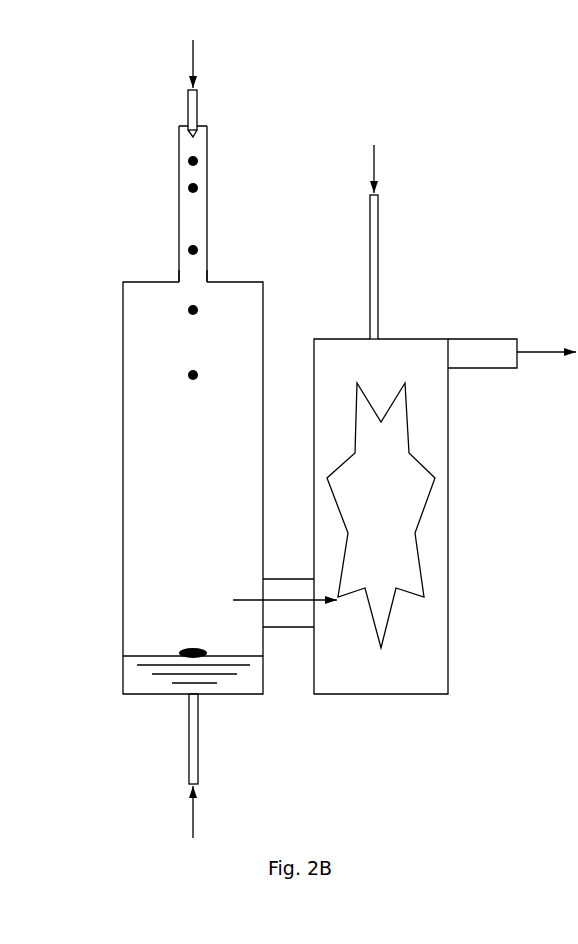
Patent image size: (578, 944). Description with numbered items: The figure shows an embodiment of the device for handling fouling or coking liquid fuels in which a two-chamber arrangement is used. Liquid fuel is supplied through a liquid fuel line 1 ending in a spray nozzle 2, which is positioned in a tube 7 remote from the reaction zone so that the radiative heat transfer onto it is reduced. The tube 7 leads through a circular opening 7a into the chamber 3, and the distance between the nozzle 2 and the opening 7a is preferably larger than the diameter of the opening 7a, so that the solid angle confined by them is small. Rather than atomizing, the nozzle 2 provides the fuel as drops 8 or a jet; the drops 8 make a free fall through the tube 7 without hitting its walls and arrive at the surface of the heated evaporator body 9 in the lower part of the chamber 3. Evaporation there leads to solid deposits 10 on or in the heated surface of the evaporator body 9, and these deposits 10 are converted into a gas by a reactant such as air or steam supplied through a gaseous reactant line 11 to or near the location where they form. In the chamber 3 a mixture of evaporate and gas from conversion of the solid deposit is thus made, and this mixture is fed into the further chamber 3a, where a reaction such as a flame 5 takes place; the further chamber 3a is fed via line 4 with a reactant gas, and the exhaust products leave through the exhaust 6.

The liquid fuel line 1 is at (198, 98).
The spray nozzle 2 is at (198, 130).
The chamber 3 is at (157, 440).
The further chamber 3a is at (438, 540).
The line 4 is at (380, 250).
The flame 5 is at (402, 480).
The exhaust 6 is at (490, 353).
The tube 7 is at (208, 195).
The circular opening 7a is at (188, 285).
The drops 8 is at (202, 308).
The heated evaporator body 9 is at (238, 676).
The solid deposits 10 is at (179, 650).
The gaseous reactant line 11 is at (198, 750).